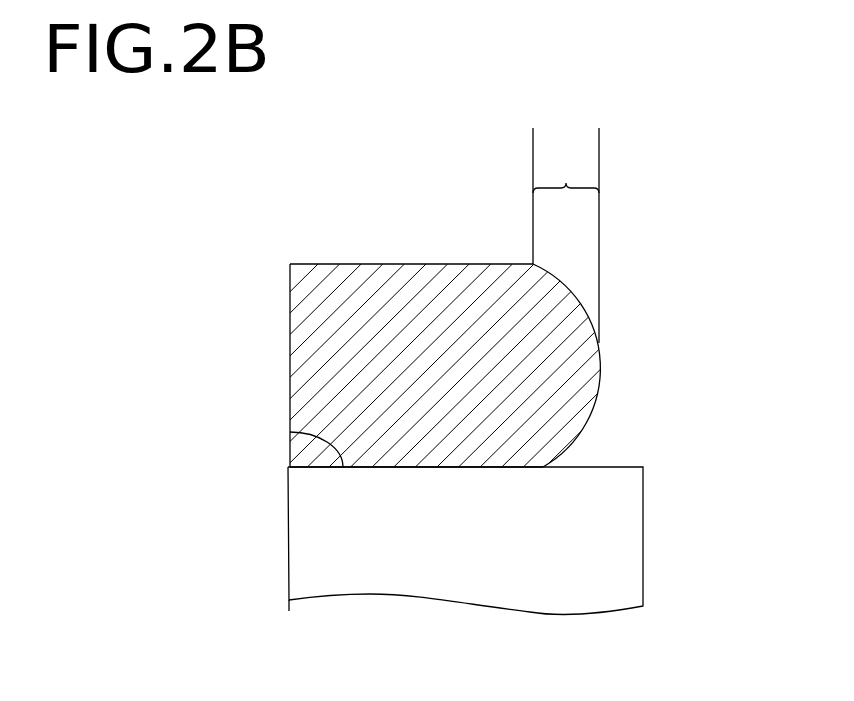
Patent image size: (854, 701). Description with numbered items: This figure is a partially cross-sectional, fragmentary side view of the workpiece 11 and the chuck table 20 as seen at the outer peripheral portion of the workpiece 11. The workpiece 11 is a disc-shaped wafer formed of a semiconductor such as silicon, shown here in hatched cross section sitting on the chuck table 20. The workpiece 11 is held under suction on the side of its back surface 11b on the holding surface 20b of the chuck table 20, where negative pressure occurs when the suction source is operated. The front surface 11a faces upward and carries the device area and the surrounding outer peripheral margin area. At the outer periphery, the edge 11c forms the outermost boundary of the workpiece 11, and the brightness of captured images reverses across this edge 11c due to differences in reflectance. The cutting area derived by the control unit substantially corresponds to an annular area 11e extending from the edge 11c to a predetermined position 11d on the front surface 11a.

The workpiece 11 is at (413, 278).
The front surface 11a is at (345, 264).
The back surface 11b is at (387, 467).
The edge 11c is at (595, 150).
The predetermined position 11d is at (529, 150).
The annular area 11e is at (566, 173).
The chuck table 20 is at (661, 490).
The holding surface 20b is at (290, 432).